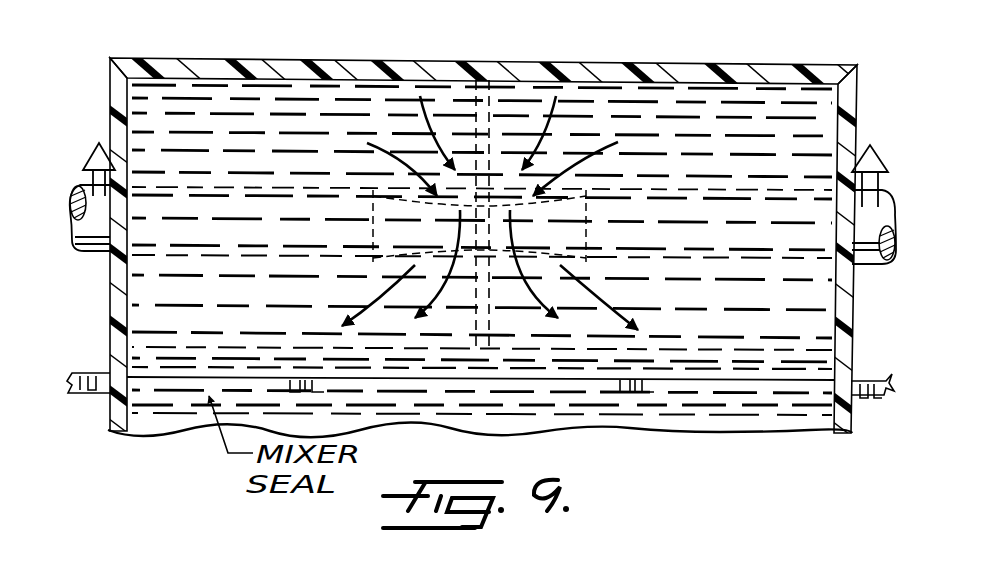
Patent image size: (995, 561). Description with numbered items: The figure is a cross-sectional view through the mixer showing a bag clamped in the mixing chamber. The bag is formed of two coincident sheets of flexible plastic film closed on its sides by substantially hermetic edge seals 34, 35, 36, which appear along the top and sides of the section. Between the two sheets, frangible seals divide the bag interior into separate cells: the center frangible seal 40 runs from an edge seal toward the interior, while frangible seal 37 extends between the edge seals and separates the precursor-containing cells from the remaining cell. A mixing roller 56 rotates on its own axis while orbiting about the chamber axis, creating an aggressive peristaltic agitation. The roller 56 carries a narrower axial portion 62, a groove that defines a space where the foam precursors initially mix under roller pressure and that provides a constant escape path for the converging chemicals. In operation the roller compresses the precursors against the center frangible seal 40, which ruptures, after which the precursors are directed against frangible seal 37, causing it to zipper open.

The edge seal 34 is at (856, 92).
The edge seal 35 is at (735, 52).
The edge seal 36 is at (122, 96).
The frangible seal 37 is at (769, 356).
The center frangible seal 40 is at (488, 108).
The mixing roller 56 is at (72, 252).
The narrower axial portion 62 is at (420, 250).